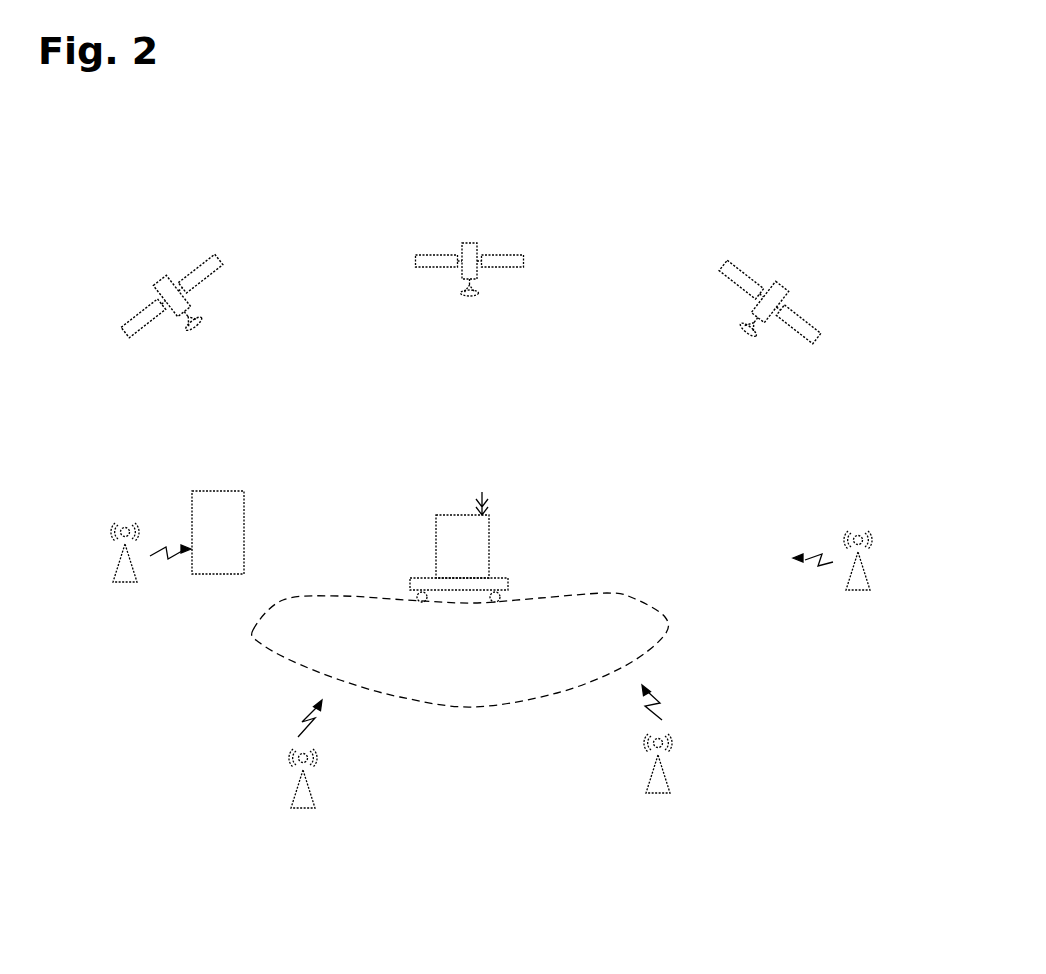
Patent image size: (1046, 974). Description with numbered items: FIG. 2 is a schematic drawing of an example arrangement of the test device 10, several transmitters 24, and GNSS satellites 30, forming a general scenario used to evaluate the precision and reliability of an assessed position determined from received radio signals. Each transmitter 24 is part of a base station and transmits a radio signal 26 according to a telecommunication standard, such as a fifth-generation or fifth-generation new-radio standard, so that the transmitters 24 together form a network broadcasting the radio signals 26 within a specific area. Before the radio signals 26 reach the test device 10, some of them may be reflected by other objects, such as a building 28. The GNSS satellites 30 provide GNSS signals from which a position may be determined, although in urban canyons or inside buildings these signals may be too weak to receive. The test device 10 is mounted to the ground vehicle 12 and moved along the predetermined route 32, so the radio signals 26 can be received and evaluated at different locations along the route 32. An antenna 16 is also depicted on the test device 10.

The test device 10 is at (436, 545).
The ground vehicle 12 is at (508, 578).
The antenna 16 is at (490, 493).
The transmitter 24 is at (125, 583).
The radio signal 26 is at (660, 702).
The building 28 is at (218, 490).
The GNSS satellite 30 is at (222, 262).
The predetermined route 32 is at (633, 598).